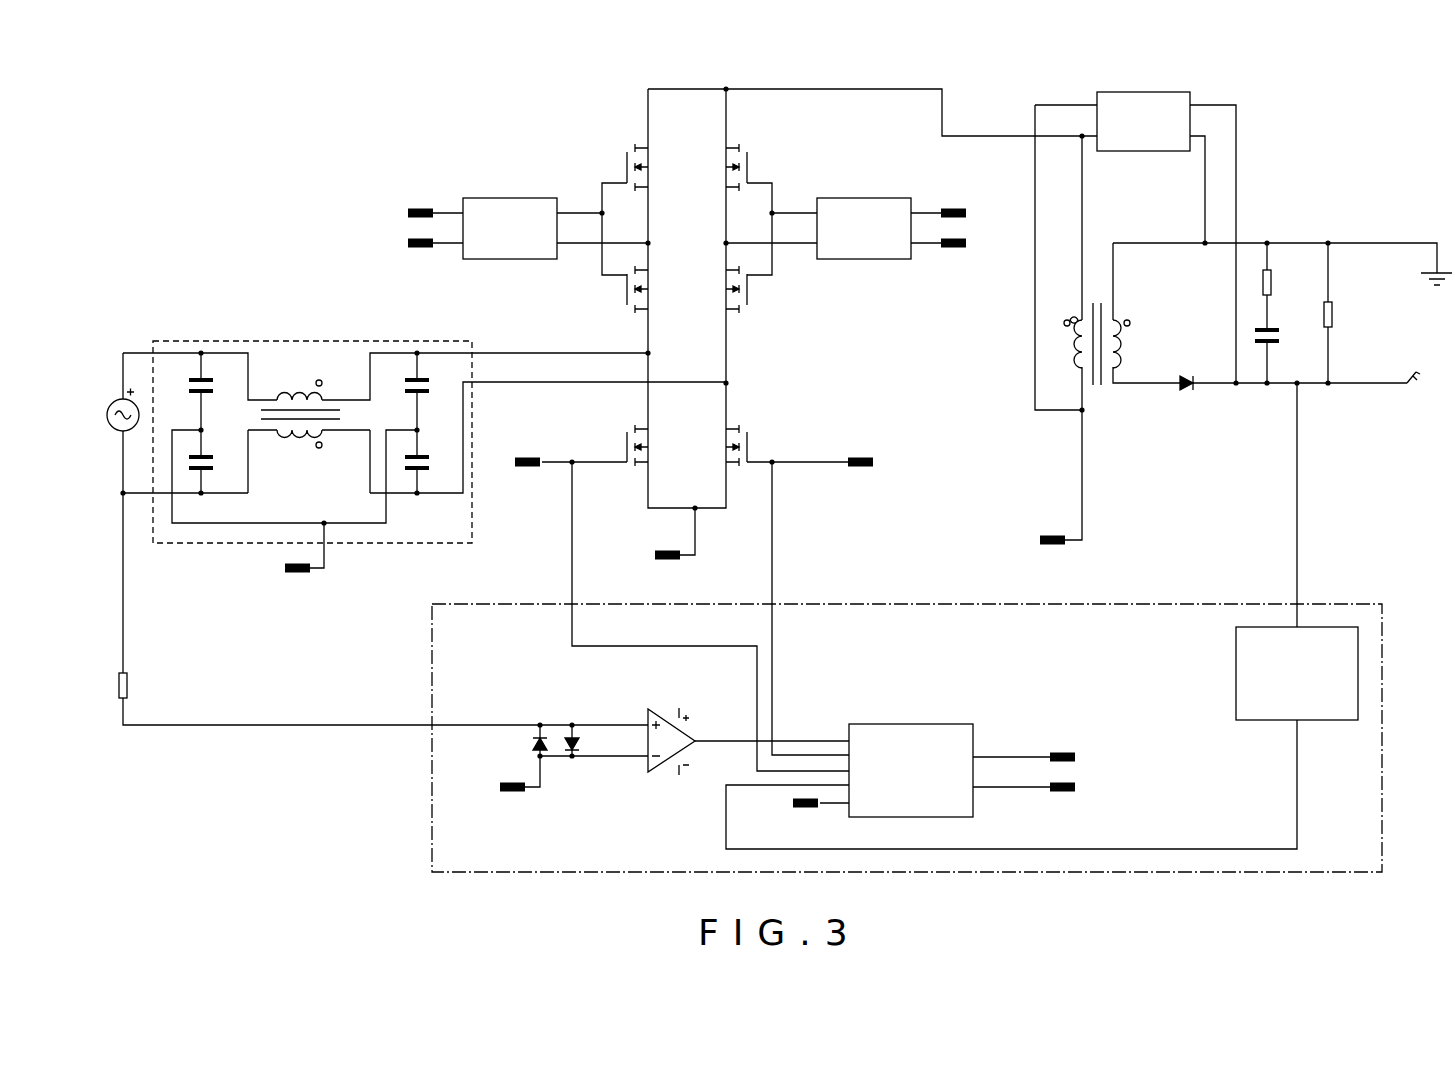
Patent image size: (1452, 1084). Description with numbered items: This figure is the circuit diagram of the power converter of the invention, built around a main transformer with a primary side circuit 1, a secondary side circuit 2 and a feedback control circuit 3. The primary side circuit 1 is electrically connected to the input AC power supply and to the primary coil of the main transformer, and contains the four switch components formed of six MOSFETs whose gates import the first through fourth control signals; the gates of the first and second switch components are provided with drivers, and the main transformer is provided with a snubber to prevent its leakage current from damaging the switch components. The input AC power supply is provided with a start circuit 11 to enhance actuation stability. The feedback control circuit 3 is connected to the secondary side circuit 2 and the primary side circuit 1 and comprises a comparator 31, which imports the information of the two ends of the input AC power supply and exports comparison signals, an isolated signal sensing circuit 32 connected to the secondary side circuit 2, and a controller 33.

The primary side circuit 1 is at (538, 131).
The secondary side circuit 2 is at (1307, 176).
The feedback control circuit 3 is at (1351, 602).
The start circuit 11 is at (261, 339).
The comparator 31 is at (665, 773).
The isolated signal sensing circuit 32 is at (1234, 672).
The controller 33 is at (924, 722).